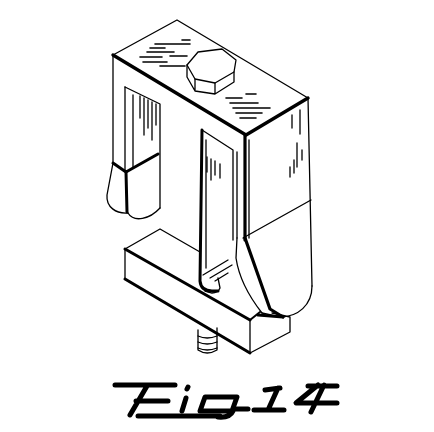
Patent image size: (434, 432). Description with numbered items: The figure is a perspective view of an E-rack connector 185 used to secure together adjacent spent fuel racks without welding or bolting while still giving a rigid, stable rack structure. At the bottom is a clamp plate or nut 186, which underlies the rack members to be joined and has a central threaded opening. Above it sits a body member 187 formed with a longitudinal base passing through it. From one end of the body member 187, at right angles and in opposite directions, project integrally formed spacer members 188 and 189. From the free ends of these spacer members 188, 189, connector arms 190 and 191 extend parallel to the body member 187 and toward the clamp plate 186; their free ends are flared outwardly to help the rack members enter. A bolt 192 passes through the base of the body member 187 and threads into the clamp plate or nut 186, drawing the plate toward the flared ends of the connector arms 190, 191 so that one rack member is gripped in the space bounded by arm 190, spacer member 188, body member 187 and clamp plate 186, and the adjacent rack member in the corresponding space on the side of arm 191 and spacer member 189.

The E-rack connector 185 is at (223, 186).
The clamp plate or nut 186 is at (193, 311).
The body member 187 is at (167, 228).
The spacer member 188 is at (137, 80).
The spacer member 189 is at (227, 145).
The connector arm 190 is at (113, 183).
The connector arm 191 is at (305, 263).
The bolt 192 is at (218, 60).